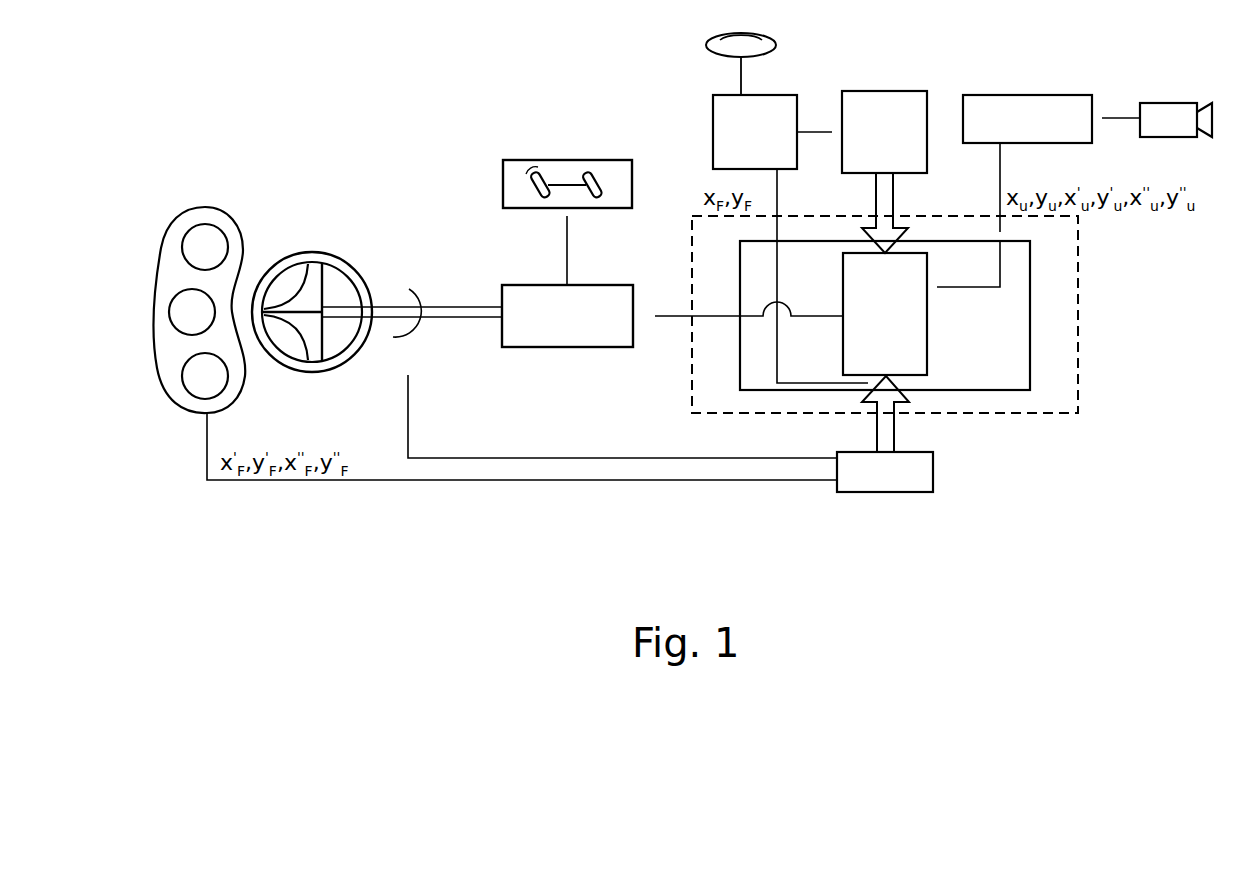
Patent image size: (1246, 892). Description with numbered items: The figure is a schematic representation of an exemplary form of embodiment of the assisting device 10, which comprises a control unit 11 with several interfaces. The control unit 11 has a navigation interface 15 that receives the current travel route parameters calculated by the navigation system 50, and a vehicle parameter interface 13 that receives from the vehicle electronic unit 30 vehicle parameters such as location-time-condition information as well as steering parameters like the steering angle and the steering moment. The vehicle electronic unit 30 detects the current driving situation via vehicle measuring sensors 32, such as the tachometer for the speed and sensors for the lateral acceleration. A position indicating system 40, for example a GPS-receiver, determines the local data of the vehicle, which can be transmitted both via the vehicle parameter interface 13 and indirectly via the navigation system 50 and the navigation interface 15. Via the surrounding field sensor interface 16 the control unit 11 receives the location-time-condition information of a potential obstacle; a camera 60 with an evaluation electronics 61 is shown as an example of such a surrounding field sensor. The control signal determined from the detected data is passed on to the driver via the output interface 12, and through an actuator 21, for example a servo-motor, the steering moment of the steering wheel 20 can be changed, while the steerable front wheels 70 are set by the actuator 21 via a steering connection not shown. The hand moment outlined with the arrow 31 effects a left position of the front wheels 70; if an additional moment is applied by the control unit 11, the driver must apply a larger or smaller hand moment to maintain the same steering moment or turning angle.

The assisting device 10 is at (1043, 414).
The control unit 11 is at (885, 314).
The output interface 12 is at (715, 315).
The vehicle parameter interface 13 is at (897, 402).
The navigation interface 15 is at (907, 220).
The surrounding field sensor interface 16 is at (933, 289).
The steering wheel 20 is at (310, 252).
The actuator 21 is at (563, 348).
The vehicle electronic unit 30 is at (888, 493).
The arrow 31 is at (417, 291).
The vehicle measuring sensors 32 is at (205, 207).
The position indicating system 40 is at (713, 132).
The navigation system 50 is at (885, 97).
The camera 60 is at (1170, 103).
The evaluation electronics 61 is at (1027, 95).
The steerable front wheels 70 is at (565, 160).